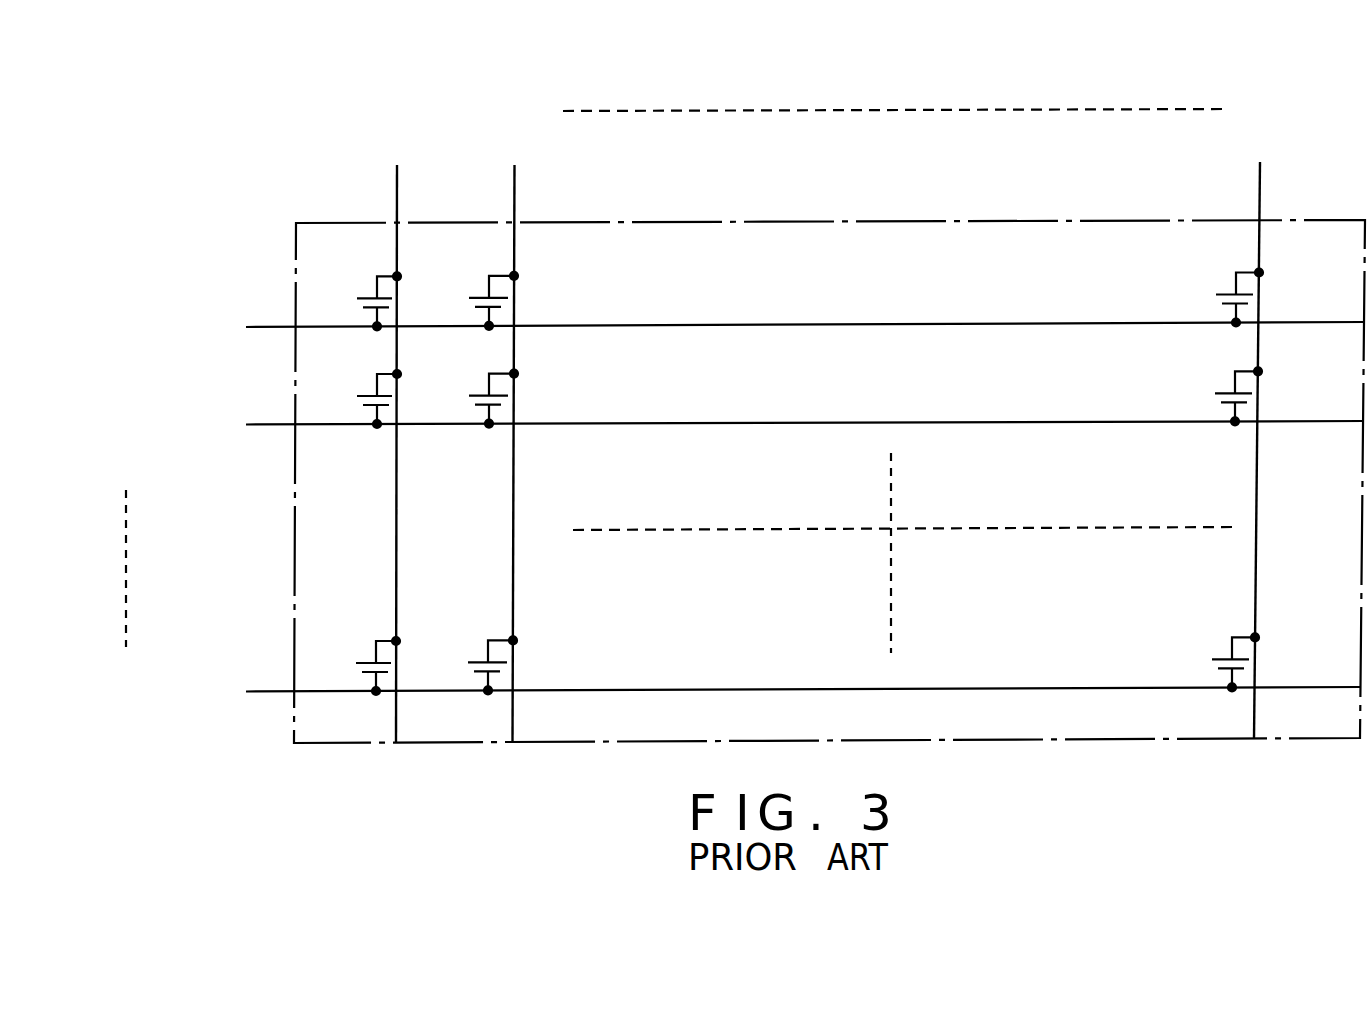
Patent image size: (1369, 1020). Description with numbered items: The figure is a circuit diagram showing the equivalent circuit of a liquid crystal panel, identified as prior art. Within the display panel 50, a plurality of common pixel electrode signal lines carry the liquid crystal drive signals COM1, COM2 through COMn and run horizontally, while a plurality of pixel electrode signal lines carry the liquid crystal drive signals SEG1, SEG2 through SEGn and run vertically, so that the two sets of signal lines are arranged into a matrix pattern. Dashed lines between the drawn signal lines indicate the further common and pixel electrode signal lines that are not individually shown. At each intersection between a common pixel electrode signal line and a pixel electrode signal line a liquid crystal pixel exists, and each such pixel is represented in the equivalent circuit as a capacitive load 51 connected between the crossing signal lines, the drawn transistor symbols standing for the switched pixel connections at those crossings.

The display panel 50 is at (1320, 220).
The capacitive load 51 is at (358, 297).
The liquid crystal drive signal SEG1 is at (405, 377).
The liquid crystal drive signal SEG2 is at (516, 376).
The liquid crystal drive signal SEGn is at (1265, 375).
The liquid crystal drive signal COM1 is at (745, 329).
The liquid crystal drive signal COM2 is at (742, 425).
The liquid crystal drive signal COMn is at (739, 693).